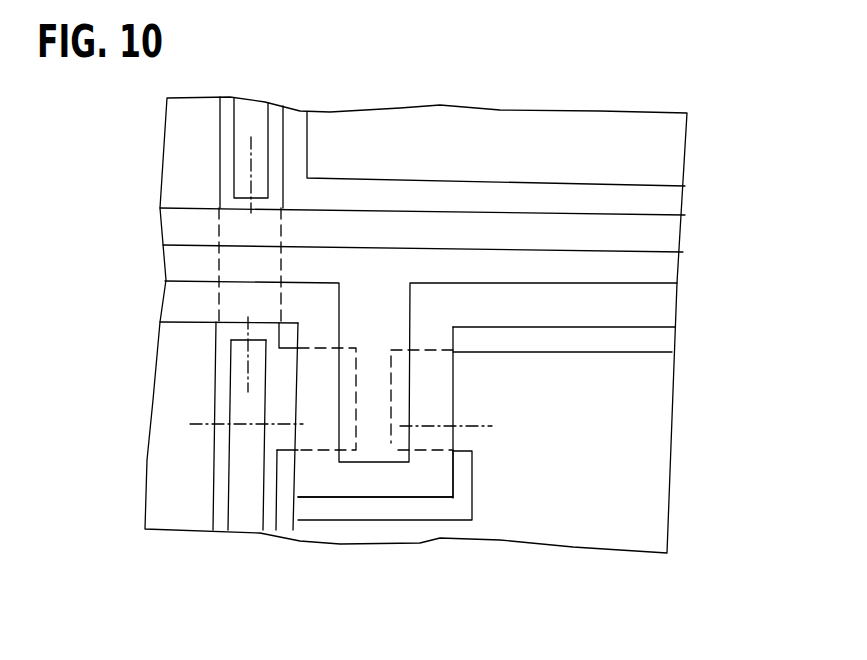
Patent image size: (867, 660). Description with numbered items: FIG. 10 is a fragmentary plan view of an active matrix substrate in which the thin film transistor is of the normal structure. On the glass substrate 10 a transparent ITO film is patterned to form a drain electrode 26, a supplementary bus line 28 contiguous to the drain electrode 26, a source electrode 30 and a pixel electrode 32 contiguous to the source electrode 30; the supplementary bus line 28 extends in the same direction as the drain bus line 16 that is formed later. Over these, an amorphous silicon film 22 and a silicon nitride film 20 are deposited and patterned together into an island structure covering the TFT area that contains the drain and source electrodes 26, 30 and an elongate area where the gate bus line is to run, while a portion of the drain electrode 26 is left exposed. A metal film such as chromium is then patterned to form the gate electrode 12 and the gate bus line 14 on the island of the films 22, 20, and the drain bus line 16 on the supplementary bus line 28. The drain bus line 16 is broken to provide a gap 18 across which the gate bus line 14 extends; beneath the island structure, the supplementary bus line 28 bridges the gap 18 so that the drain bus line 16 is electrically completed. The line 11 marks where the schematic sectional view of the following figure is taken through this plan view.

The glass substrate 10 is at (667, 203).
The section line 11— 11 is at (190, 424).
The gate electrode 12 is at (251, 137).
The gate bus line 14 is at (478, 273).
The drain bus line 16 is at (252, 127).
The gap 18 is at (232, 233).
The silicon nitride film 20 is at (332, 490).
The amorphous silicon film 22 is at (375, 474).
The drain electrode 26 is at (320, 432).
The supplementary bus line 28 is at (223, 358).
The source electrode 30 is at (399, 437).
The pixel electrode 32 is at (587, 427).